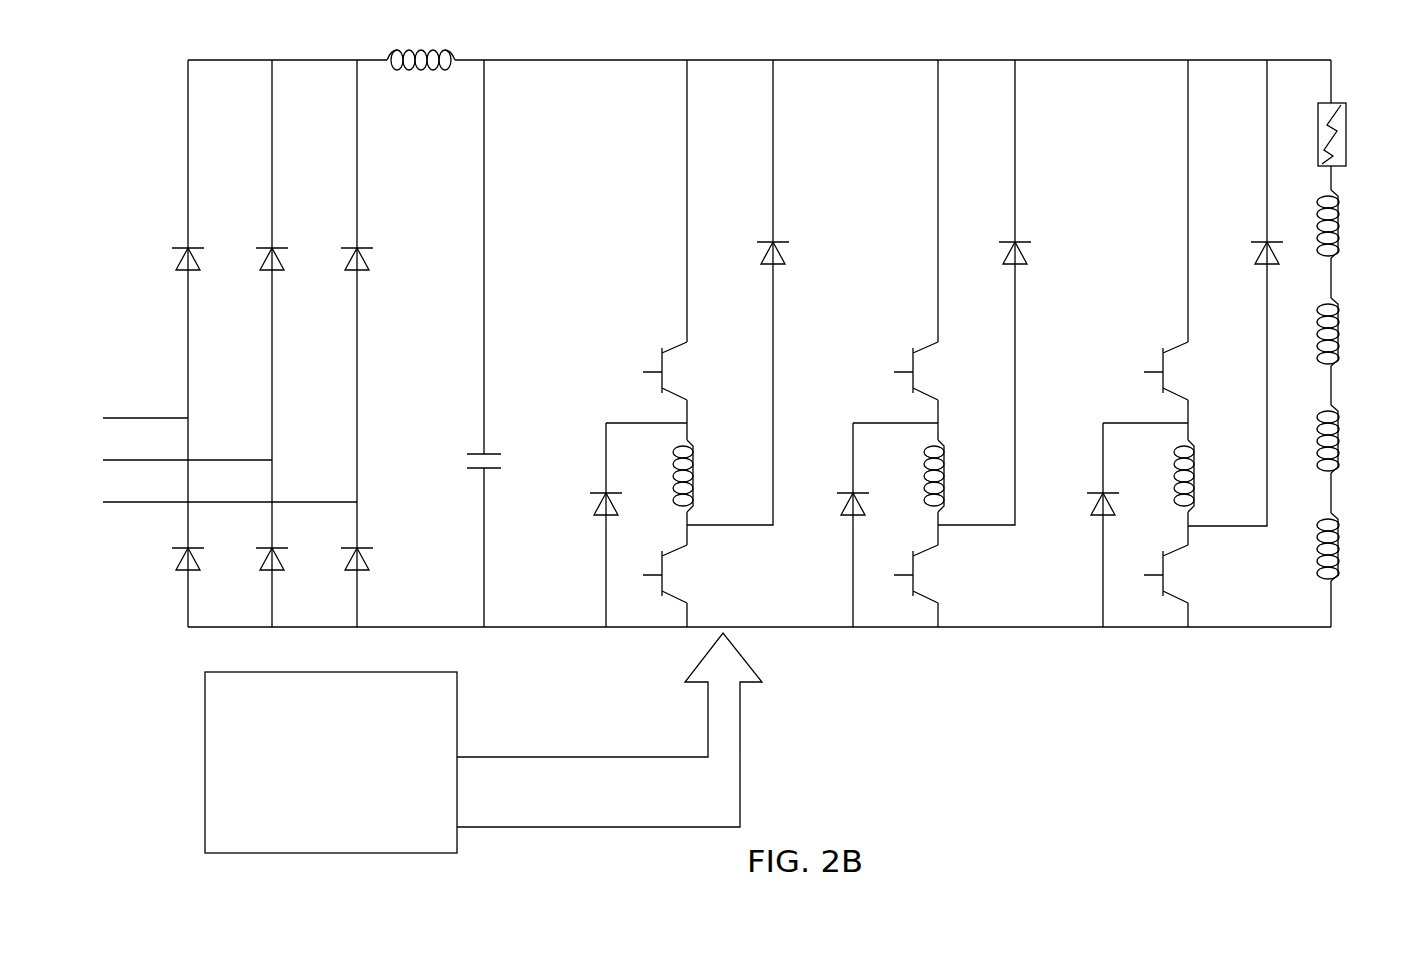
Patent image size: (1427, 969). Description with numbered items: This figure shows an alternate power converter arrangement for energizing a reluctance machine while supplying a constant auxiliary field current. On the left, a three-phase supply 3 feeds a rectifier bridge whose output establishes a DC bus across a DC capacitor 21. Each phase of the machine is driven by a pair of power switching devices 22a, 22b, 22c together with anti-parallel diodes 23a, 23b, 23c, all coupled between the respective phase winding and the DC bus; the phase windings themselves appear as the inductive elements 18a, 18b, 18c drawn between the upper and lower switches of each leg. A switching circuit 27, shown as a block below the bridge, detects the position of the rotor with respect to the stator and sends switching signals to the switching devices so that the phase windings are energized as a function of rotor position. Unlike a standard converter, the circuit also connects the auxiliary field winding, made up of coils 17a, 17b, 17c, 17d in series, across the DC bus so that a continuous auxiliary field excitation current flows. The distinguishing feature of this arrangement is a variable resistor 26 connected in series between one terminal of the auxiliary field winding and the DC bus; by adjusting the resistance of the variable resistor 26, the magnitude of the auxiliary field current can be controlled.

The three-phase AC supply 3 is at (224, 460).
The coil of auxiliary field winding 17a is at (1350, 233).
The coil of auxiliary field winding 17b is at (1350, 338).
The coil of auxiliary field winding 17c is at (1350, 450).
The coil winding 17d is at (1350, 555).
The inductor 18a is at (738, 452).
The inductor 18b is at (988, 452).
The inductor 18c is at (1238, 452).
The DC capacitor 21 is at (477, 446).
The power switching device 22a is at (636, 369).
The power switching device 22b is at (887, 369).
The power switching device 22c is at (1137, 369).
The anti-parallel diode 23a is at (754, 250).
The anti-parallel diode 23b is at (996, 250).
The anti-parallel diode 23c is at (1248, 250).
The variable resistor 26 is at (1354, 152).
The switching circuit 27 is at (205, 765).